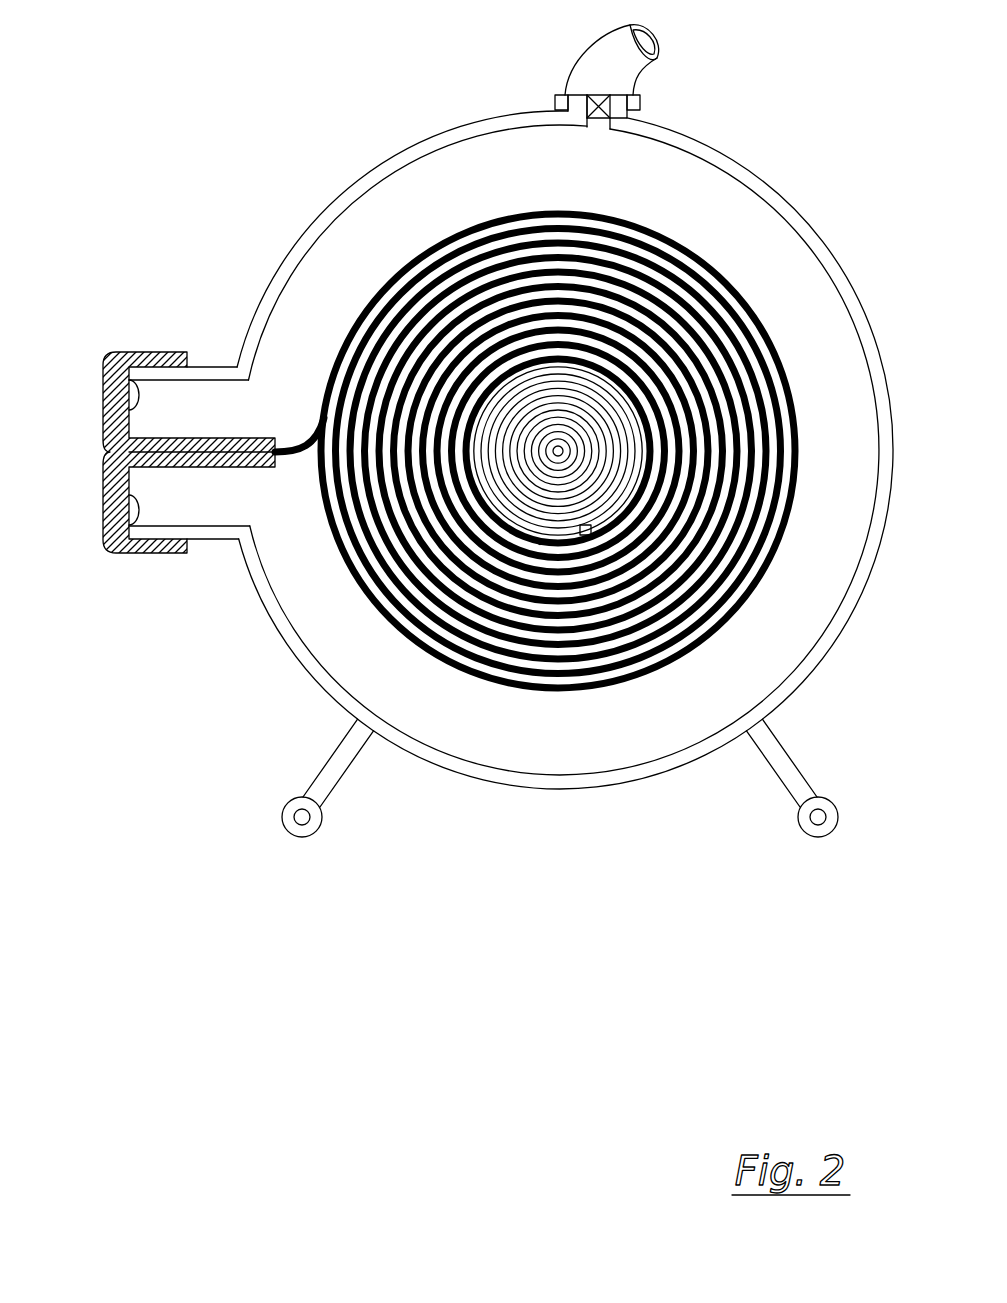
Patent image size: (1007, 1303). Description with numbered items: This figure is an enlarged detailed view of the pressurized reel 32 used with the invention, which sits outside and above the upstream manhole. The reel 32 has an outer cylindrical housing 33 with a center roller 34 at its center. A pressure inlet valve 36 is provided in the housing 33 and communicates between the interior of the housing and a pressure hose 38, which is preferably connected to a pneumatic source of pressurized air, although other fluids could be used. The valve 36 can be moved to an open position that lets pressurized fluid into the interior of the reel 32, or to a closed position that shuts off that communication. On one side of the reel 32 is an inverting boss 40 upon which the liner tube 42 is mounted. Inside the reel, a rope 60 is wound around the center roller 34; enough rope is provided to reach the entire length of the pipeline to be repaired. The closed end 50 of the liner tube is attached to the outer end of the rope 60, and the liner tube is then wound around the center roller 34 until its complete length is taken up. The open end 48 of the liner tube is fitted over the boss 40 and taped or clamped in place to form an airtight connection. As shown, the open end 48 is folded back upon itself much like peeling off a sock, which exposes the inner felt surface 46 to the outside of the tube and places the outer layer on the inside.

The pressurized reel 32 is at (297, 165).
The outer cylindrical housing 33 is at (760, 180).
The center roller 34 is at (558, 450).
The pressure inlet valve 36 is at (593, 93).
The pressure hose 38 is at (662, 50).
The inverting boss 40 is at (213, 350).
The liner tube 42 is at (403, 263).
The inner felt surface 46 is at (118, 400).
The open end of the liner tube 48 is at (200, 352).
The closed end of the liner tube 50 is at (592, 535).
The rope 60 is at (540, 543).